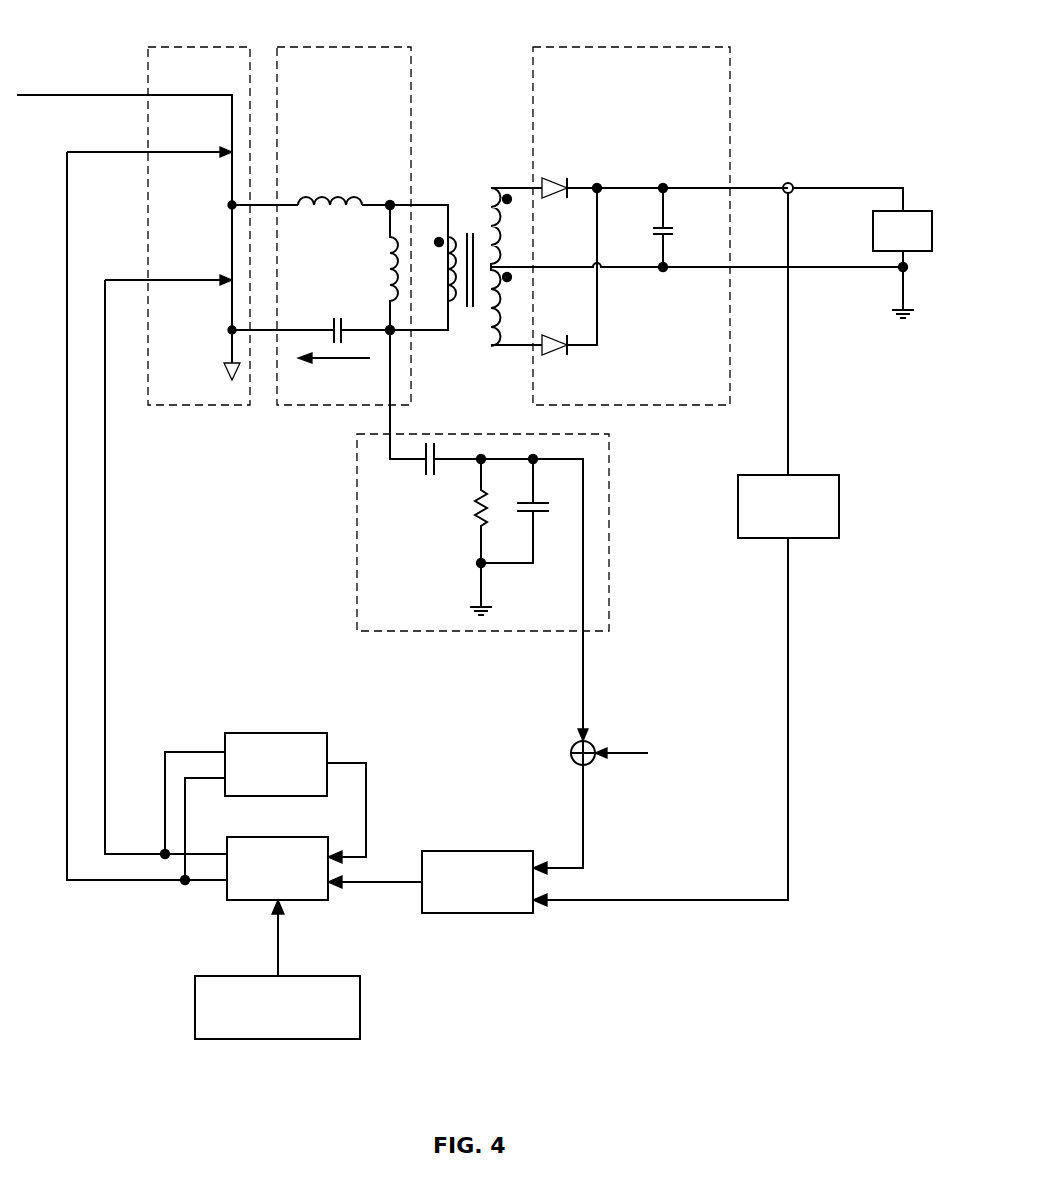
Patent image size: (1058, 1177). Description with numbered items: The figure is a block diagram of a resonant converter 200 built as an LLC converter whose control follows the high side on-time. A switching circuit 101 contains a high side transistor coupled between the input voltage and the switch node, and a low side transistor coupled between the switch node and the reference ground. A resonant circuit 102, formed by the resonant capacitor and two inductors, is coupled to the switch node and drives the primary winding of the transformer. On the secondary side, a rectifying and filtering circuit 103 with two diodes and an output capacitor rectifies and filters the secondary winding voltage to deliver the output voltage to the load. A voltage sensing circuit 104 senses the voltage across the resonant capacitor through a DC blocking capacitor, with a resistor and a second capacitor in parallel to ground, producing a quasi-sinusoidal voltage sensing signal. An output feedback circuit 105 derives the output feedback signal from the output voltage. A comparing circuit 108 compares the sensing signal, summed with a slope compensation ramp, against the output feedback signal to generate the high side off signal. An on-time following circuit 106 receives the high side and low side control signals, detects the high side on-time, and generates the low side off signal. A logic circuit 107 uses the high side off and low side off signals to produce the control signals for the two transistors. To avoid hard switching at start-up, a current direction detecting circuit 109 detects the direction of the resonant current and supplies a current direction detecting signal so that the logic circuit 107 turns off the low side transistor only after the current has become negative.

The resonant converter 200 is at (837, 48).
The switching circuit 101 is at (178, 405).
The resonant circuit 102 is at (300, 405).
The rectifying and filtering circuit 103 is at (553, 405).
The voltage sensing circuit 104 is at (373, 631).
The output feedback circuit 105 is at (750, 539).
The on-time following circuit 106 is at (248, 797).
The logic circuit 107 is at (238, 900).
The comparing circuit 108 is at (443, 912).
The current direction detecting circuit 109 is at (240, 1040).